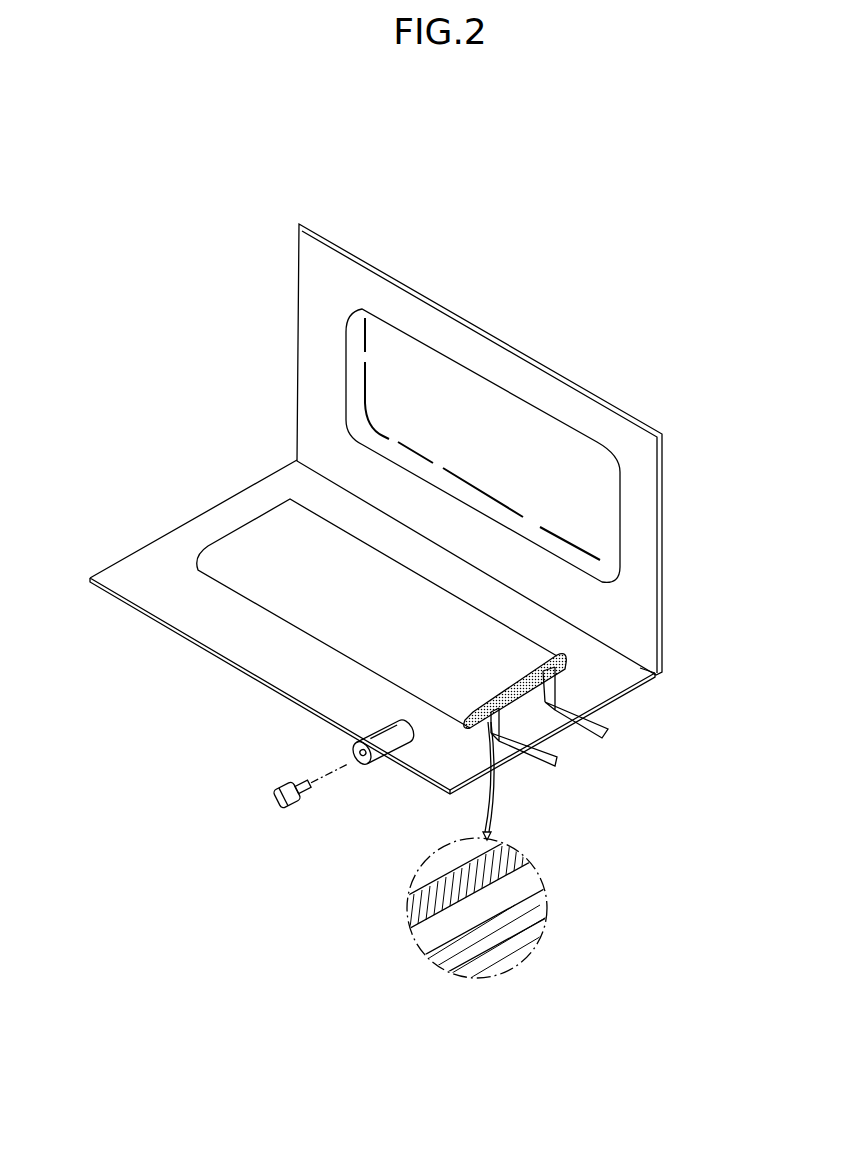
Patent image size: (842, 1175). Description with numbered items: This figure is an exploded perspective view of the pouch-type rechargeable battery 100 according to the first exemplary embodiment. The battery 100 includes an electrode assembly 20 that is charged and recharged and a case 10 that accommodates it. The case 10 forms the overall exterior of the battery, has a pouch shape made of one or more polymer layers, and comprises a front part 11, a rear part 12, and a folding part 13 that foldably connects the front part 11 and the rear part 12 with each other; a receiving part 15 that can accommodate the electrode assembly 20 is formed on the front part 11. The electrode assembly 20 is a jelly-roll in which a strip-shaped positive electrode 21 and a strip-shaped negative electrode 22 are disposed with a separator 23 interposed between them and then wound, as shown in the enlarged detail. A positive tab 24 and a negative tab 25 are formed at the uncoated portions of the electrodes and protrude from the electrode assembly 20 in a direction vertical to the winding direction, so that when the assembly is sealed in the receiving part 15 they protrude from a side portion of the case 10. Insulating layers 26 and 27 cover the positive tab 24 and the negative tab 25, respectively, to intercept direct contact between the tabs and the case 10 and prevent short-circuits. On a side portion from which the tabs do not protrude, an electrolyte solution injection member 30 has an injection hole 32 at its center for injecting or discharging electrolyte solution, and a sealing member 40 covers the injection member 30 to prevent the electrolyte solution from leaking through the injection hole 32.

The pouch-type rechargeable battery 100 is at (456, 151).
The case 10 is at (714, 618).
The front part 11 is at (508, 449).
The rear part 12 is at (640, 688).
The folding part 13 is at (640, 662).
The receiving part 15 is at (597, 514).
The electrode assembly 20 is at (288, 603).
The positive electrode 21 is at (412, 910).
The negative electrode 22 is at (437, 960).
The separator 23 is at (430, 937).
The positive tab 24 is at (622, 720).
The negative tab 25 is at (559, 767).
The insulating layer 26 is at (570, 712).
The insulating layer 27 is at (540, 729).
The electrolyte solution injection member 30 is at (365, 781).
The injection hole 32 is at (364, 765).
The sealing member 40 is at (277, 797).